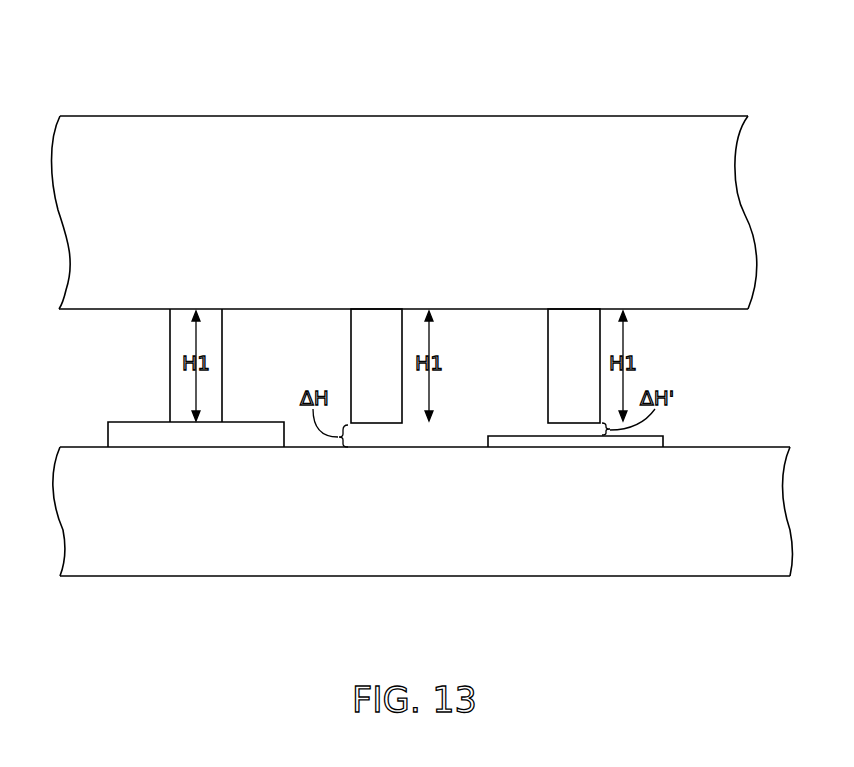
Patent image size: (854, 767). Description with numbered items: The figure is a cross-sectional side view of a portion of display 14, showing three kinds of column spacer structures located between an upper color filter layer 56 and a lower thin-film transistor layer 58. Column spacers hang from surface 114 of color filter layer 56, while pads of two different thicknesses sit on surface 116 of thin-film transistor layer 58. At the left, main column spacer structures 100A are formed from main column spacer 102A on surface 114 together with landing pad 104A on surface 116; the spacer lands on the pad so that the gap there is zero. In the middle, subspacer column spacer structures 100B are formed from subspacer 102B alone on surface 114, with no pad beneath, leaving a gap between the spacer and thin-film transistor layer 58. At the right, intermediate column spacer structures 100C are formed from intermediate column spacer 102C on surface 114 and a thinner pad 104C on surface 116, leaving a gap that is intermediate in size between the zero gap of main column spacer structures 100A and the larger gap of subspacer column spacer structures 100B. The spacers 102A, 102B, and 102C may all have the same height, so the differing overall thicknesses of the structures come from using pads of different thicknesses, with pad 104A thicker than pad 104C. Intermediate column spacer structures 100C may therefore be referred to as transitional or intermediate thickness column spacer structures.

The display 14 is at (83, 64).
The color filter layer 56 is at (735, 214).
The thin-film transistor layer 58 is at (773, 496).
The surface of color filter layer 114 is at (714, 310).
The surface of thin-film transistor layer 116 is at (740, 447).
The main column spacer structures 100A is at (97, 312).
The subspacer column spacer structures 100B is at (450, 312).
The intermediate column spacer structures 100C is at (674, 312).
The main column spacer 102A is at (232, 312).
The subspacer 102B is at (358, 338).
The intermediate column spacer 102C is at (558, 338).
The pad 104A is at (138, 432).
The pad 104C is at (522, 436).